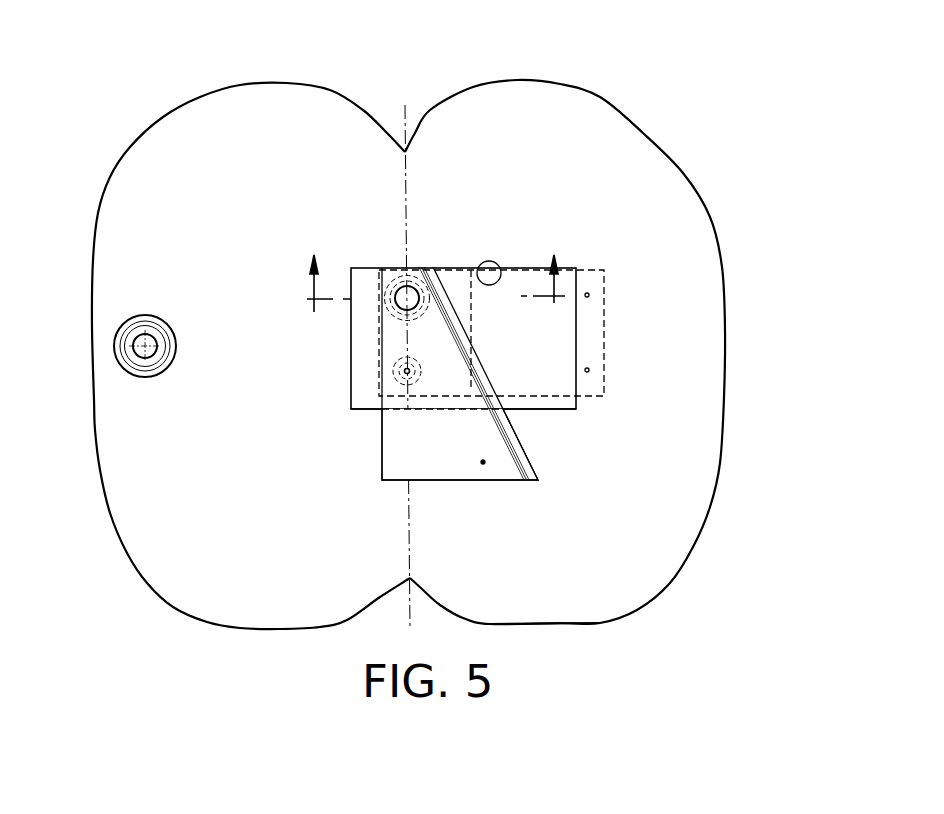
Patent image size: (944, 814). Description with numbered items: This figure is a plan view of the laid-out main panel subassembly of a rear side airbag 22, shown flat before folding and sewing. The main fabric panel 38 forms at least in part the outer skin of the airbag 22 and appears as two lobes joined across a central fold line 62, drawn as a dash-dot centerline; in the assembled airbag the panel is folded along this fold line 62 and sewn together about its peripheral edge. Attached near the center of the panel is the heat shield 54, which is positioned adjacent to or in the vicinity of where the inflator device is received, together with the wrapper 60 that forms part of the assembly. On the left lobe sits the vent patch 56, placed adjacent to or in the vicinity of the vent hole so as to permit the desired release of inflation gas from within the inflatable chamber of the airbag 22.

The airbag 22 is at (718, 120).
The main fabric panel 38 is at (592, 625).
The heat shield 54 is at (523, 280).
The vent patch 56 is at (126, 328).
The wrapper 60 is at (489, 285).
The fold line 62 is at (404, 110).